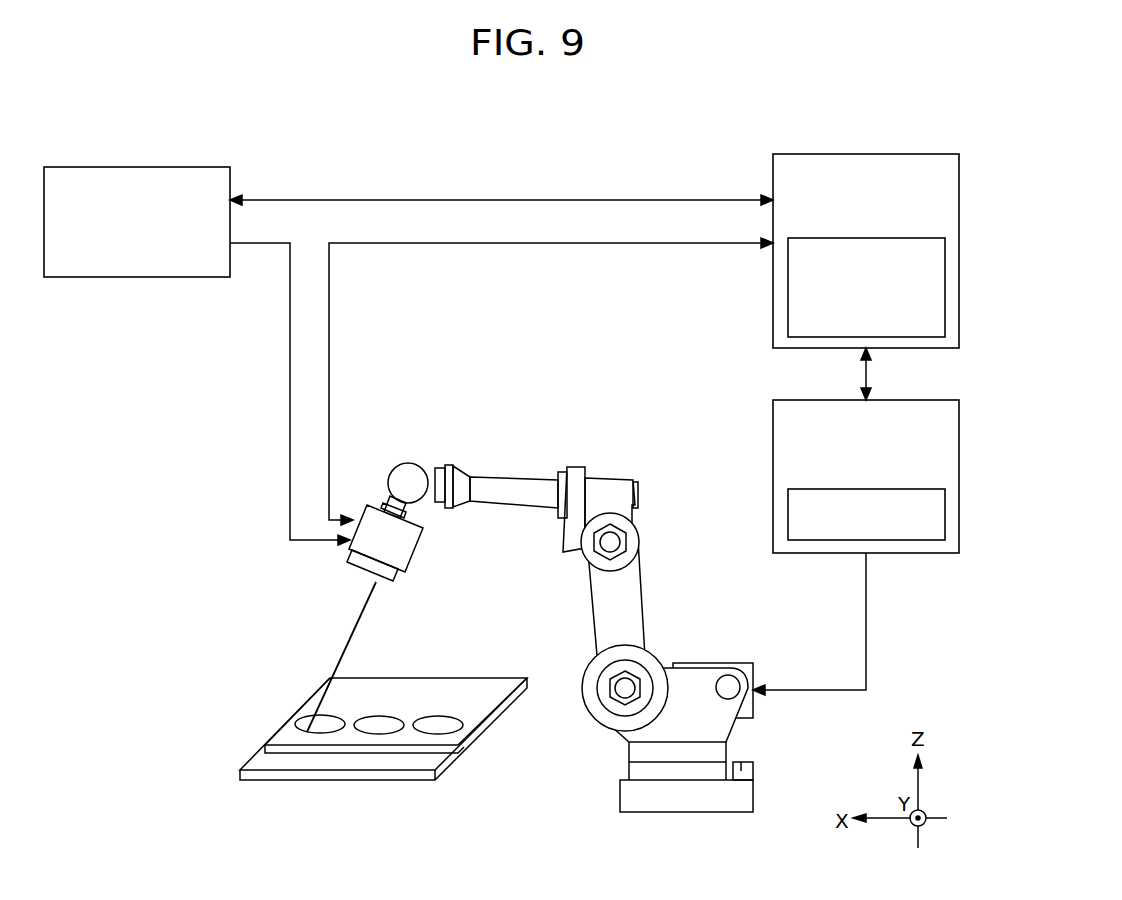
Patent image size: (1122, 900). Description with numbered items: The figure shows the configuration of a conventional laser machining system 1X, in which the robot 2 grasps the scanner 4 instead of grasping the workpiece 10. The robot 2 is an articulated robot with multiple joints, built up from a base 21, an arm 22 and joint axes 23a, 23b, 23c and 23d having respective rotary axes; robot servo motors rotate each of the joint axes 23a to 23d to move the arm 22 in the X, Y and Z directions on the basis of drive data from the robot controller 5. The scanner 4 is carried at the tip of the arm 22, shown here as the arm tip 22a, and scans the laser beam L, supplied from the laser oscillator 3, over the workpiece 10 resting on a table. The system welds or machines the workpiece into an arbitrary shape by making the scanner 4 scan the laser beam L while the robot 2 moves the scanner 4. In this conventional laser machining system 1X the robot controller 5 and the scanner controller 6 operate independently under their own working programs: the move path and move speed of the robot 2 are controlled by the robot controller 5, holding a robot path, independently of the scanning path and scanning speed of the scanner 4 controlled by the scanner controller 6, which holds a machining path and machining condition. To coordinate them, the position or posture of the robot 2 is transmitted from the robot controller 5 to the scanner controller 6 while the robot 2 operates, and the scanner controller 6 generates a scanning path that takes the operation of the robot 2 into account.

The conventional laser machining system 1X is at (583, 160).
The laser oscillator 3 is at (203, 167).
The scanner controller 6 is at (910, 154).
The robot controller 5 is at (910, 400).
The robot 2 is at (704, 574).
The base 21 is at (695, 800).
The arm 22 is at (522, 453).
The arm tip 22a is at (385, 498).
The joint axis 23a is at (655, 657).
The joint axis 23b is at (640, 537).
The joint axis 23c is at (607, 475).
The joint axis 23d is at (423, 460).
The scanner 4 is at (417, 560).
The laser beam L is at (353, 620).
The workpiece 10 is at (500, 688).